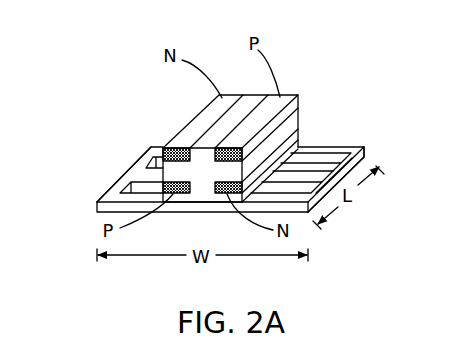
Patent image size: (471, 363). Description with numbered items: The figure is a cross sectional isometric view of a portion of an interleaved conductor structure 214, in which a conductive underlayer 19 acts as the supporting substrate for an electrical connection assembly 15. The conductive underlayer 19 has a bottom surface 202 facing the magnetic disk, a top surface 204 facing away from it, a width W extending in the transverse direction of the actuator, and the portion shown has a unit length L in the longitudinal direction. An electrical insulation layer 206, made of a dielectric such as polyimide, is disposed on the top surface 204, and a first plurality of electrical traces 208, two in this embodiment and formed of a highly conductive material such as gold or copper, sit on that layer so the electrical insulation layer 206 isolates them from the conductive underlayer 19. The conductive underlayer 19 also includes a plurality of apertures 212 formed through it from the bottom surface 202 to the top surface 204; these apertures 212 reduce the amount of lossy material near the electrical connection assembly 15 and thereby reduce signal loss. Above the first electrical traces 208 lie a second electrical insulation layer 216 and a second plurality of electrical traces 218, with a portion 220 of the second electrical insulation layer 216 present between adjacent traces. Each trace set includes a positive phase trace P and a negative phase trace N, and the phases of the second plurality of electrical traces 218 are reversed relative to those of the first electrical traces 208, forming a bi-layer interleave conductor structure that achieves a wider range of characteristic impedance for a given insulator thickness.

The electrical connection assembly 15 is at (302, 61).
The conductive underlayer 19 is at (112, 190).
The bottom surface 202 is at (100, 214).
The top surface 204 is at (137, 175).
The electrical insulation layer 206 is at (305, 183).
The electrical traces 208 is at (276, 163).
The apertures 212 is at (368, 175).
The interleaved conductor structure 214 is at (228, 106).
The second electrical insulation layer 216 is at (296, 128).
The second plurality of electrical traces 218 is at (247, 131).
The portion of the second electrical insulating layer 220 is at (248, 103).